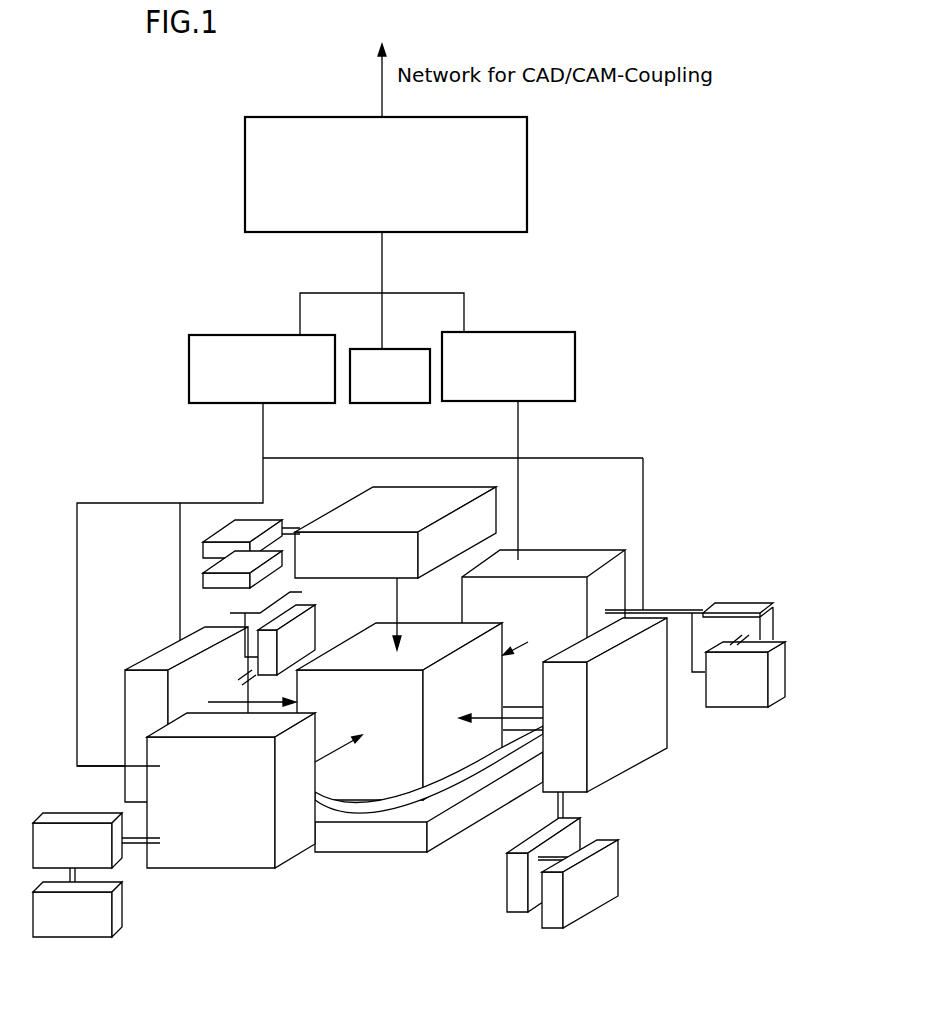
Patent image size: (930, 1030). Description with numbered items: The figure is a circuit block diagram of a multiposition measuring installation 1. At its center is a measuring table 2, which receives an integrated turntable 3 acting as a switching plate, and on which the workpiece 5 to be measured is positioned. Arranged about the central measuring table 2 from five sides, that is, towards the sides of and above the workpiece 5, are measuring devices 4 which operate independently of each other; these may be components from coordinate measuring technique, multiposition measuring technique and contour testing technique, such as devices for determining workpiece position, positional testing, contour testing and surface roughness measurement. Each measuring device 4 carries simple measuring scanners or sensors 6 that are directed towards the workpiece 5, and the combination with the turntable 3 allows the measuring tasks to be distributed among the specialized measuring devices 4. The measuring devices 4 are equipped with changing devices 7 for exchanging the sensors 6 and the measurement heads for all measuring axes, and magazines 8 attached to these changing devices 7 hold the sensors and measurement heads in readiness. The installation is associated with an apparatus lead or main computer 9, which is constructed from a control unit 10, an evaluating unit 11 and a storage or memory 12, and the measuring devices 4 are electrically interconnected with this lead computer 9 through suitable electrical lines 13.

The multiposition measuring installation 1 is at (677, 539).
The measuring table 2 is at (399, 830).
The turntable 3 is at (485, 790).
The measuring devices 4 is at (228, 870).
The workpiece 5 is at (375, 785).
The measuring sensors 6 is at (330, 750).
The changing devices 7 is at (517, 900).
The magazines 8 is at (590, 892).
The main computer 9 is at (527, 162).
The control unit 10 is at (230, 335).
The evaluating unit 11 is at (540, 332).
The memory 12 is at (402, 404).
The electrical lines 13 is at (112, 503).